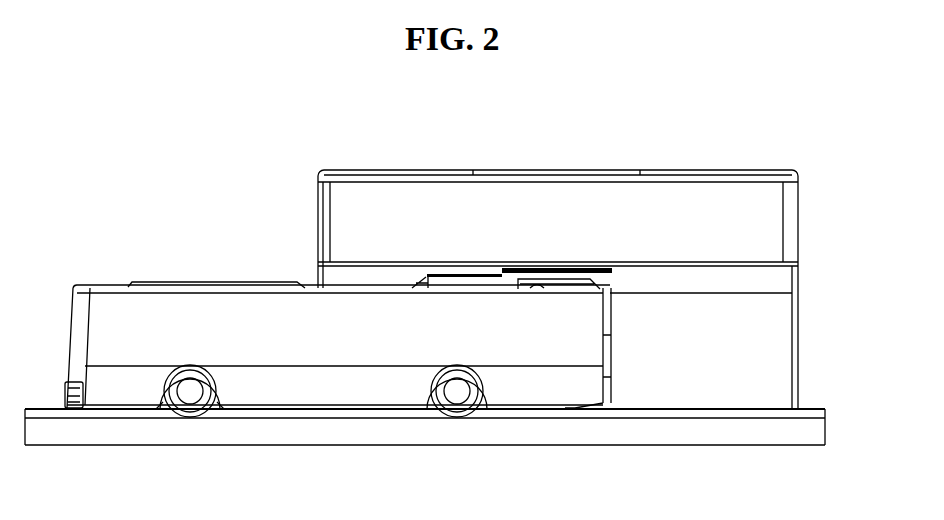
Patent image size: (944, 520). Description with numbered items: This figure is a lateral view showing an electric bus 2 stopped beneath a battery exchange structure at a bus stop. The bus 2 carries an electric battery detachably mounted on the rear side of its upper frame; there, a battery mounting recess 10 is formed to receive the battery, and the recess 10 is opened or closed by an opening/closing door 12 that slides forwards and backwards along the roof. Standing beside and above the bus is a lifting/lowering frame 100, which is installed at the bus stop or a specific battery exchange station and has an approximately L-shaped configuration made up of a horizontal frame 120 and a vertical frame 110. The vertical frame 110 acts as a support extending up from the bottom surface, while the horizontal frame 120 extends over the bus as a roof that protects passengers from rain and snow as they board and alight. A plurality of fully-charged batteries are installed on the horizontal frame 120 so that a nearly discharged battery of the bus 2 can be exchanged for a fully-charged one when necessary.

The bus 2 is at (345, 387).
The battery mounting recess 10 is at (553, 284).
The opening/closing door 12 is at (457, 278).
The lifting/lowering frame 100 is at (601, 266).
The vertical frame 110 is at (787, 325).
The horizontal frame 120 is at (731, 198).